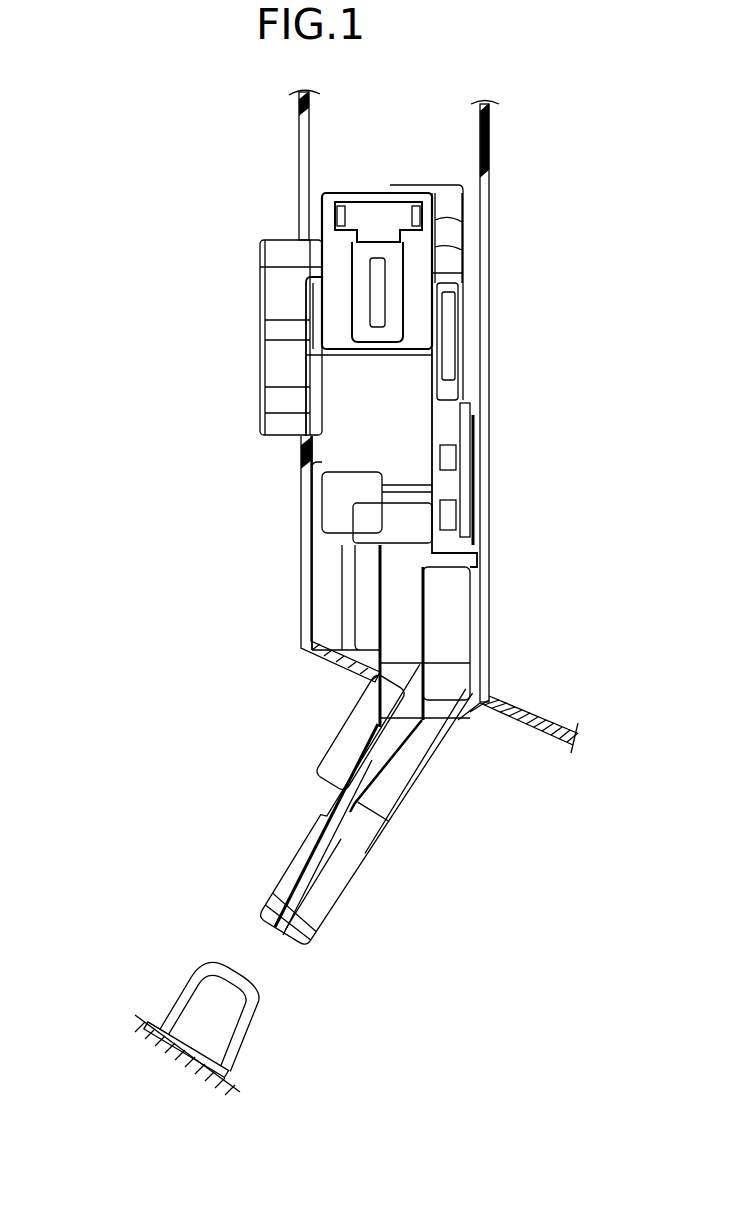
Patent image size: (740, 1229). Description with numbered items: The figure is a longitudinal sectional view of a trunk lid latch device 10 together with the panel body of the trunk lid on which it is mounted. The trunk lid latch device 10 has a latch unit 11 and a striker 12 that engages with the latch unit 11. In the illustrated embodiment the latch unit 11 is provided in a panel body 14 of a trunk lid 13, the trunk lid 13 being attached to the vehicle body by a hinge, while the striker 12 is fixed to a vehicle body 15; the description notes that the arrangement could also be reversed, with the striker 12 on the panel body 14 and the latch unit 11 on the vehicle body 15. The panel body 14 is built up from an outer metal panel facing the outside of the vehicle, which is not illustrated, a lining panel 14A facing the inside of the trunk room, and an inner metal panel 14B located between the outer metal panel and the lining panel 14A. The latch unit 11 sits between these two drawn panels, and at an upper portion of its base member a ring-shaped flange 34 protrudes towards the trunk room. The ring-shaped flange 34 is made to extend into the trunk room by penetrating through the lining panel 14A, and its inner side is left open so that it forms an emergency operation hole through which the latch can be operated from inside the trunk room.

The trunk lid latch device 10 is at (181, 611).
The latch unit 11 is at (238, 340).
The striker 12 is at (195, 982).
The trunk lid 13 is at (540, 733).
The panel body 14 is at (302, 630).
The lining panel 14A is at (298, 178).
The inner metal panel 14B is at (490, 188).
The vehicle body 15 is at (140, 1032).
The ring-shaped flange 34 is at (280, 254).